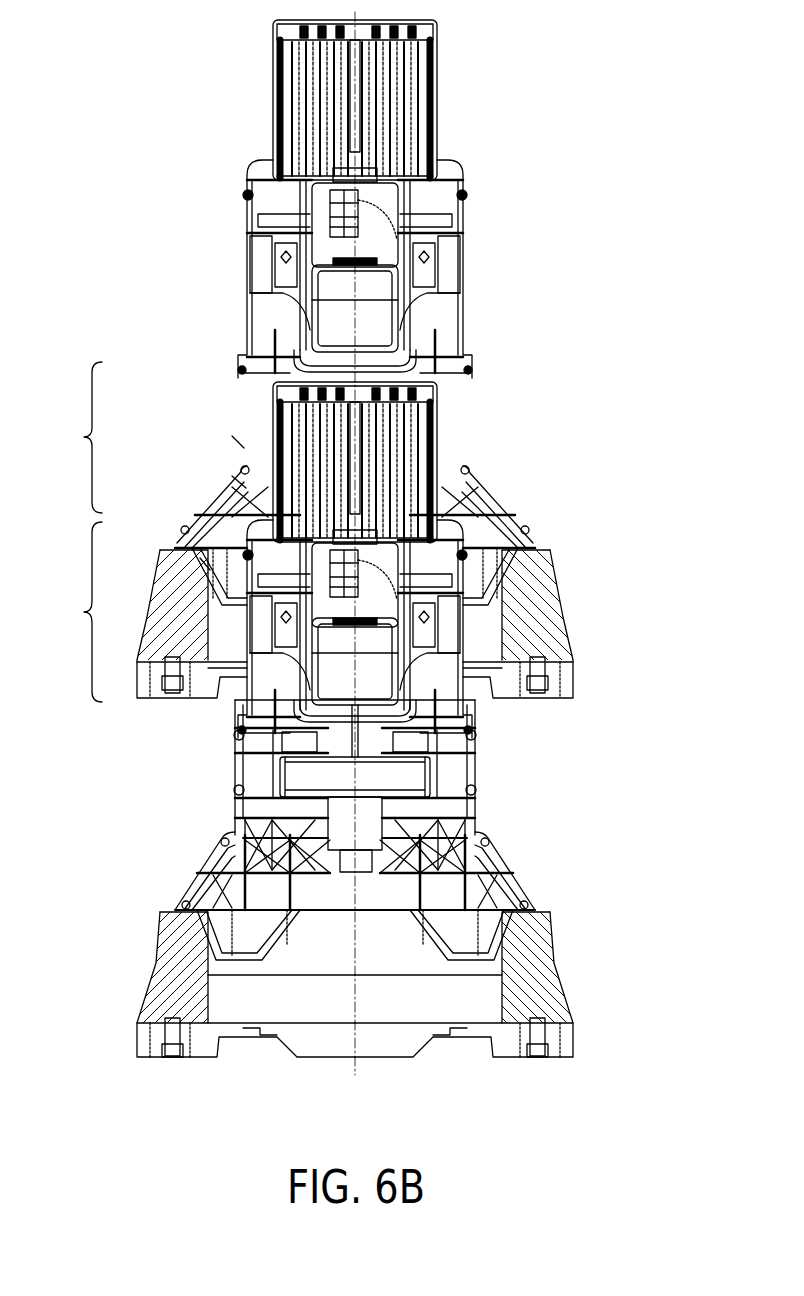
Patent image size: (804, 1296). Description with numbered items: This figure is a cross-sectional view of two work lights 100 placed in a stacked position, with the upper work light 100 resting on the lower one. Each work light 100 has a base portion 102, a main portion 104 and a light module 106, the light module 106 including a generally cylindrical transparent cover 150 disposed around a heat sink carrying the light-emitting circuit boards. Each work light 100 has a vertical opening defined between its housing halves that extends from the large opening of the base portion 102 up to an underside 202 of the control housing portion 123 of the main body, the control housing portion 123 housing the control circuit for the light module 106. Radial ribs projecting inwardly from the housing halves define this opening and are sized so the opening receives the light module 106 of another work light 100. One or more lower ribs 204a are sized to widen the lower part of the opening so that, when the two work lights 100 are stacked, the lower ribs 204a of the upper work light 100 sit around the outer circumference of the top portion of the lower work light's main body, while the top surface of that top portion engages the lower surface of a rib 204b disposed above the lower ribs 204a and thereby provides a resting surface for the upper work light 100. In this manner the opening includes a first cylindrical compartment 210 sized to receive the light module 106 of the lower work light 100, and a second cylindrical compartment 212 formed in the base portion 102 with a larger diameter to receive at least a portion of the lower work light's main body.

The work light 100 is at (360, 543).
The base portion 102 is at (609, 558).
The main portion 104 is at (575, 327).
The light module 106 is at (517, 106).
The control housing portion 123 is at (379, 284).
The cover 150 is at (436, 52).
The underside of the control housing portion 202 is at (420, 368).
The lower ribs 204a is at (203, 563).
The rib 204b is at (237, 482).
The first cylindrical compartment 210 is at (72, 437).
The second cylindrical compartment 212 is at (72, 612).